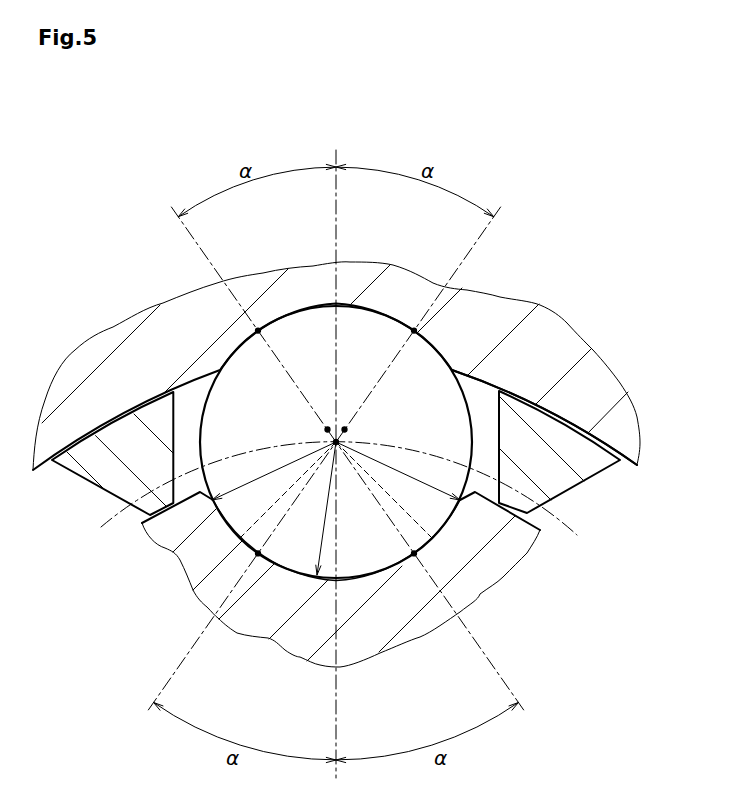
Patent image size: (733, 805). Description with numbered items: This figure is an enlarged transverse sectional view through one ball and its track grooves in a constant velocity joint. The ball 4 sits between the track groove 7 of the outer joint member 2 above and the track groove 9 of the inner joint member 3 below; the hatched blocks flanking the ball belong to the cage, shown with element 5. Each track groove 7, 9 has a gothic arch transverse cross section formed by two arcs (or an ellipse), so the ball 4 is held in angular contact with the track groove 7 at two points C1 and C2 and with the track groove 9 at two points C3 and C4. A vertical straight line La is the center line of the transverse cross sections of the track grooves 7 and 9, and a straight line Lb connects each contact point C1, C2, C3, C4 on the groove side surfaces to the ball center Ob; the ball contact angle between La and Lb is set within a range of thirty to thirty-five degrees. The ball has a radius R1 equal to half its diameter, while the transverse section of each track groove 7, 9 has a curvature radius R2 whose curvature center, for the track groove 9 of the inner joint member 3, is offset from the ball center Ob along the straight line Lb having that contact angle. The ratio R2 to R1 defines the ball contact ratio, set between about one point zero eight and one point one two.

The outer joint member 2 is at (482, 312).
The inner joint member 3 is at (486, 569).
The ball 4 is at (566, 336).
The cage 5 is at (555, 434).
The track groove 7 is at (245, 350).
The track groove 9 is at (376, 570).
The straight line La is at (338, 158).
The straight line Lb is at (181, 229).
The ball center Ob is at (342, 450).
The radius of the ball R1 is at (328, 495).
The curvature radius R2 is at (266, 478).
The contact point C1 is at (410, 332).
The contact point C2 is at (262, 331).
The contact point C3 is at (415, 551).
The contact point C4 is at (258, 551).